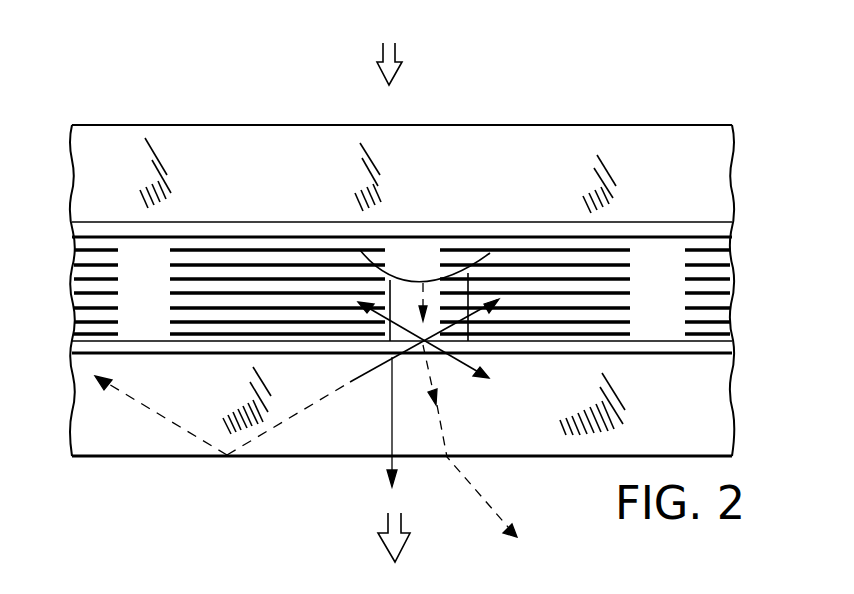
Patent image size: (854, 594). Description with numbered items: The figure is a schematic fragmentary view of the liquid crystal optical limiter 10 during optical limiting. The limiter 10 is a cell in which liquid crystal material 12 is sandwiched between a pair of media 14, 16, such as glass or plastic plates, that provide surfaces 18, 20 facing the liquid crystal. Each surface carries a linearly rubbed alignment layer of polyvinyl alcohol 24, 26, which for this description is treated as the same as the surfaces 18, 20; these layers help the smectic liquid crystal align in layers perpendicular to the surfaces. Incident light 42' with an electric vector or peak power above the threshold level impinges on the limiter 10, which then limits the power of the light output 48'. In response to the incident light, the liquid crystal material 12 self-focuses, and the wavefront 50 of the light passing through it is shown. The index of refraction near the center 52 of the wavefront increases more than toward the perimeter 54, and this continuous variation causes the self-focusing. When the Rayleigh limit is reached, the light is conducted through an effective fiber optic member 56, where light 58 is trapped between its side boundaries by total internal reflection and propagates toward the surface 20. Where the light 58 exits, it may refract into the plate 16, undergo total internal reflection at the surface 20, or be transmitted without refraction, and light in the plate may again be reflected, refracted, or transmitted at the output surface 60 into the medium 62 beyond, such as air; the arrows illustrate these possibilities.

The optical limiter 10 is at (746, 133).
The liquid crystal material 12 is at (733, 299).
The medium 14 is at (522, 146).
The medium 16 is at (83, 428).
The surface 18 is at (612, 224).
The surface 20 is at (680, 350).
The polyvinyl alcohol layer 24 is at (729, 230).
The polyvinyl alcohol layer 26 is at (723, 349).
The incident light 42' is at (426, 64).
The light output 48' is at (424, 543).
The wavefront 50 is at (389, 278).
The center of wavefront 52 is at (427, 280).
The perimeter of wavefront 54 is at (361, 250).
The effective fiber optic member 56 is at (392, 298).
The light 58 is at (437, 297).
The output surface 60 is at (113, 456).
The medium 62 is at (218, 523).